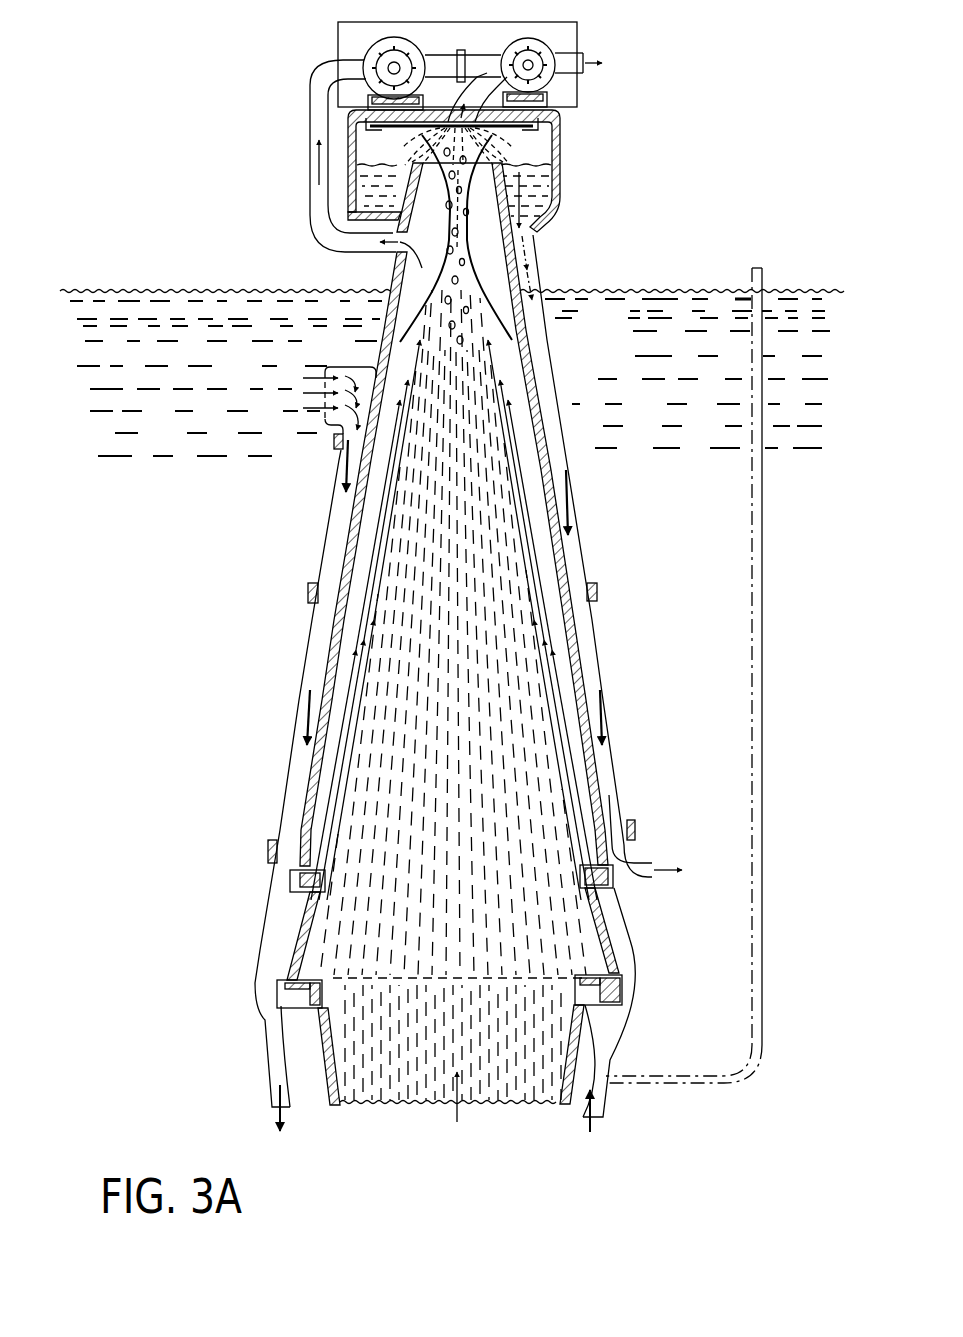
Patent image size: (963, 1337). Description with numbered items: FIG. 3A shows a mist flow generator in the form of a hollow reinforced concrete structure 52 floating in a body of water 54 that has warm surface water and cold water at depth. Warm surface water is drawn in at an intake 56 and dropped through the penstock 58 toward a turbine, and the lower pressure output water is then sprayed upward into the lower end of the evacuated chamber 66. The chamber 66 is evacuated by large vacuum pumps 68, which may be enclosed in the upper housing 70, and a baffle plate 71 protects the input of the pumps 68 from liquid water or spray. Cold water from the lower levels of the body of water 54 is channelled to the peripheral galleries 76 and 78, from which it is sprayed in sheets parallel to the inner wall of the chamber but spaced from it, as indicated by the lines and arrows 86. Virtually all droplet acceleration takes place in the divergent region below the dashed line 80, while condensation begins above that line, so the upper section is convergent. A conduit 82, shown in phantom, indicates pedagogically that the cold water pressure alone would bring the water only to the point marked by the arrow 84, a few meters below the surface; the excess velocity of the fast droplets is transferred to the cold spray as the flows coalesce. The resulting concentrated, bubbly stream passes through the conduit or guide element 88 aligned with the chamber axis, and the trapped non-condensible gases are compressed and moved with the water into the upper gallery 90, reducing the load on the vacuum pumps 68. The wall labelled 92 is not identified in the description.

The hollow reinforced concrete structure 52 is at (525, 360).
The body of water 54 is at (452, 373).
The intake 56 is at (353, 372).
The penstock 58 is at (294, 785).
The evacuated chamber 66 is at (453, 695).
The vacuum pumps 68 is at (515, 45).
The upper housing 70 is at (577, 35).
The baffle plate 71 is at (410, 124).
The peripheral gallery 76 is at (303, 992).
The peripheral gallery 78 is at (308, 882).
The dashed line 80 is at (422, 977).
The conduit 82 is at (756, 485).
The arrow 84 is at (760, 306).
The lines and arrows 86 is at (410, 433).
The conduit or guide element 88 is at (487, 297).
The upper gallery 90 is at (380, 178).
The shroud wall 92 is at (540, 332).